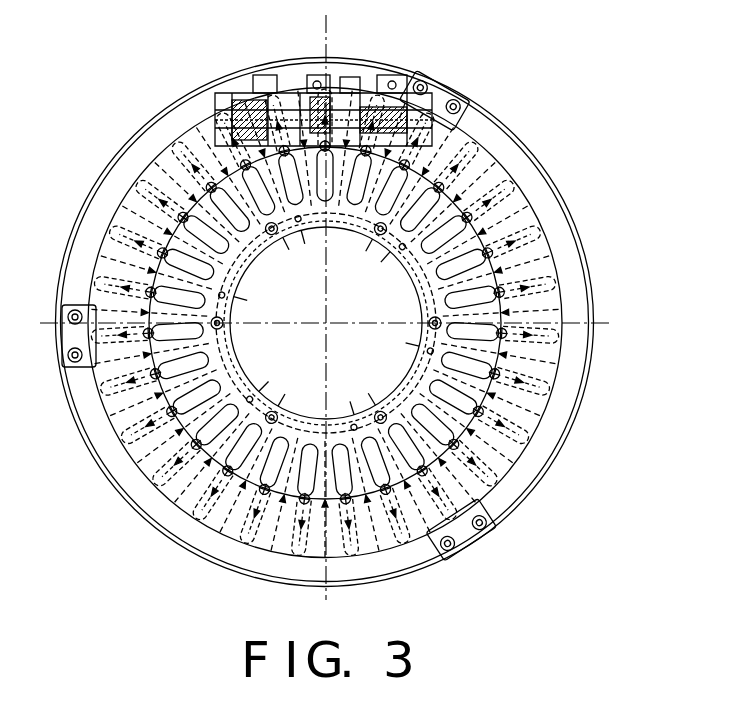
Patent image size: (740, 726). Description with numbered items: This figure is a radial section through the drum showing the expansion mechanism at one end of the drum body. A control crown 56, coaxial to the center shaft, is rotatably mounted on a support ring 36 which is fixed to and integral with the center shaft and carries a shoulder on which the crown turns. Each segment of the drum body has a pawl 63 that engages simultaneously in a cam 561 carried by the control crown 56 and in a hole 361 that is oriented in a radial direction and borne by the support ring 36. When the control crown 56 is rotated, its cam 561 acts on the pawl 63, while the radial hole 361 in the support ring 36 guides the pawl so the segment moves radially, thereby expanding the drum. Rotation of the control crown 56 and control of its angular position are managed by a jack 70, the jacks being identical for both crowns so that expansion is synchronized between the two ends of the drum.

The support ring 36 is at (580, 402).
The control crown 56 is at (520, 450).
The pawl 63 is at (487, 256).
The hole 361 is at (462, 245).
The cam 561 is at (520, 283).
The jack 70 is at (238, 76).